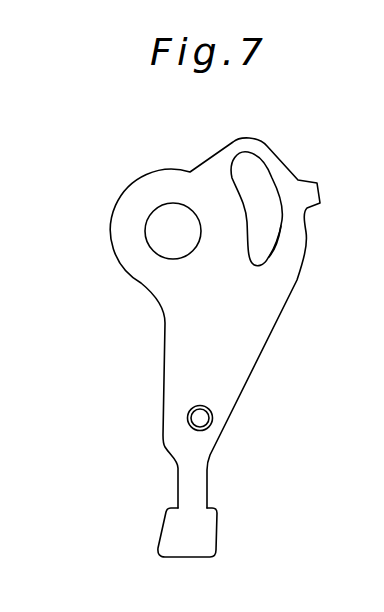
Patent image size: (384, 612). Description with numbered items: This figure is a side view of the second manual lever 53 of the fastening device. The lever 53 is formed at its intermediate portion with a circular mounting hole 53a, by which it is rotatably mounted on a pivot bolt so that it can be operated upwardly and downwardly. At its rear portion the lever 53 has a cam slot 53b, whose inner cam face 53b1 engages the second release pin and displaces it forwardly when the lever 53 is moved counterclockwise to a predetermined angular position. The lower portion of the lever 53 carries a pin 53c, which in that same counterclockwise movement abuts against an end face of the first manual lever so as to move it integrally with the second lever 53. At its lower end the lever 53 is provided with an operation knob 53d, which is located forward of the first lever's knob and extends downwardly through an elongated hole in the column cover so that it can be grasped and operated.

The second manual lever 53 is at (280, 312).
The circular mounting hole 53a is at (145, 233).
The cam slot 53b is at (264, 167).
The inner cam face 53b1 is at (273, 238).
The pin 53c is at (203, 418).
The operation knob 53d is at (202, 535).